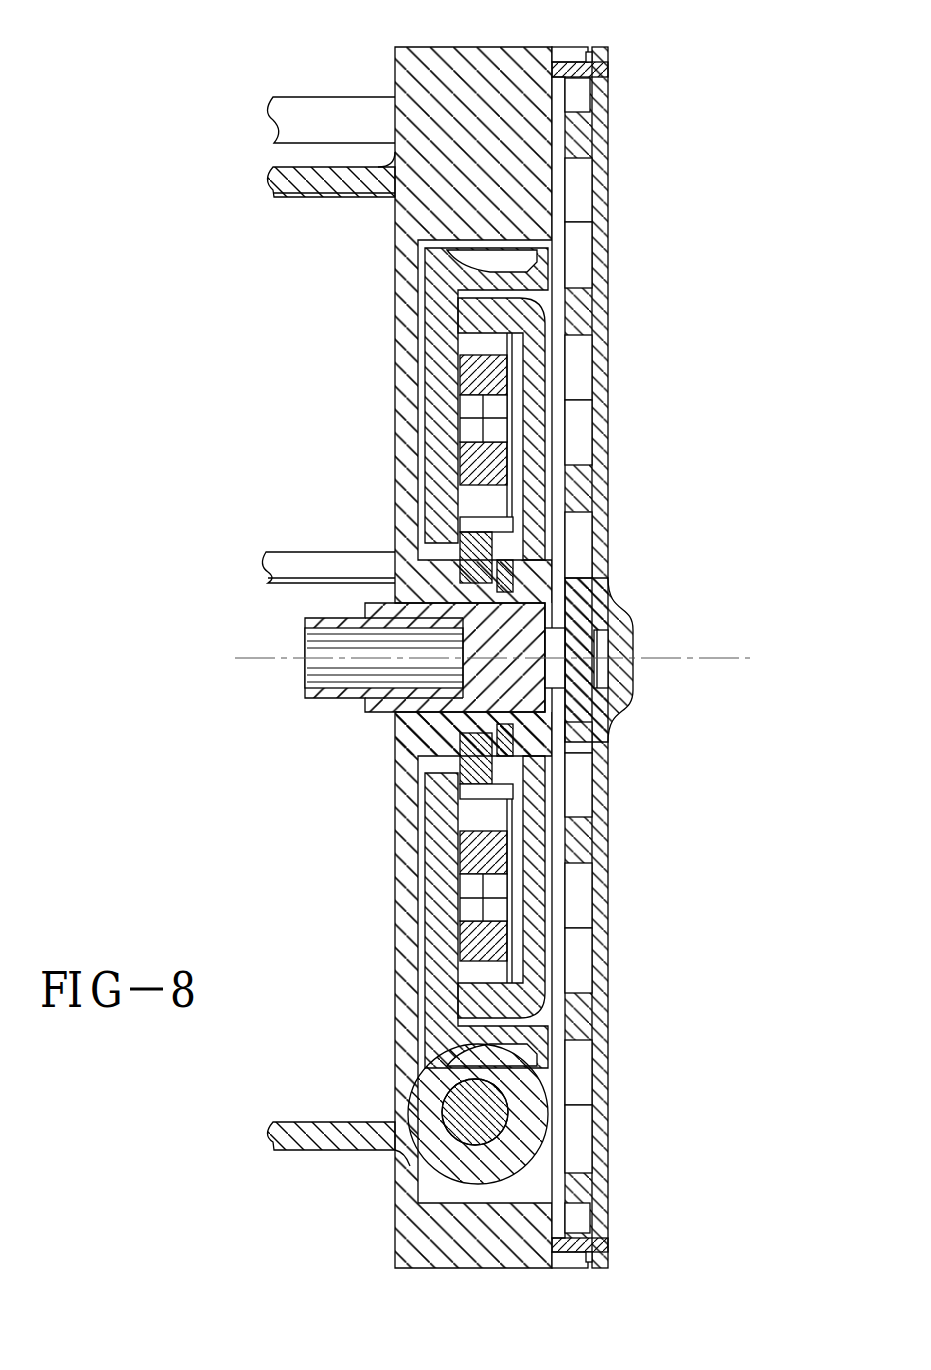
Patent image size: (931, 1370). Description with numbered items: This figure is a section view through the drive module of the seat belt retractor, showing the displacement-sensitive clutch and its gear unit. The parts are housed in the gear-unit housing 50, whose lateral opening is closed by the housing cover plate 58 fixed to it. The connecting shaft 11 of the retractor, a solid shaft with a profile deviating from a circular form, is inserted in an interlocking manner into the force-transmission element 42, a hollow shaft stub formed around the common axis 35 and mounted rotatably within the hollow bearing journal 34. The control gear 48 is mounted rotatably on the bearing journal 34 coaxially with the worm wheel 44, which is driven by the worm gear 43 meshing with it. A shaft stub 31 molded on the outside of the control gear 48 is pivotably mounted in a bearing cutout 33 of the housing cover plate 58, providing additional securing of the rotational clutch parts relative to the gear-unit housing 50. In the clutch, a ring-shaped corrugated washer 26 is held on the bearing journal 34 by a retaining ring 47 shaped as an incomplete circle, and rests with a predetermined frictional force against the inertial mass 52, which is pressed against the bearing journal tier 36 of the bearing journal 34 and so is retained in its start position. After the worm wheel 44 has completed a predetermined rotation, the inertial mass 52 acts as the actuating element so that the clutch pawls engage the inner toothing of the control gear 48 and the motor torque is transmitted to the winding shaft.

The gear-unit housing 50 is at (500, 60).
The housing cover plate 58 is at (605, 178).
The worm wheel 44 is at (540, 268).
The control gear 48 is at (530, 320).
The inertial mass 52 is at (488, 465).
The corrugated washer 26 is at (500, 555).
The shaft stub 31 is at (590, 640).
The bearing cutout 33 is at (617, 680).
The retaining ring 47 is at (530, 745).
The worm gear 43 is at (517, 1100).
The bearing journal tier 36 is at (425, 615).
The force-transmission element 42 is at (430, 618).
The connecting shaft 11 is at (348, 641).
The common axis 35 is at (280, 658).
The bearing journal 34 is at (398, 740).